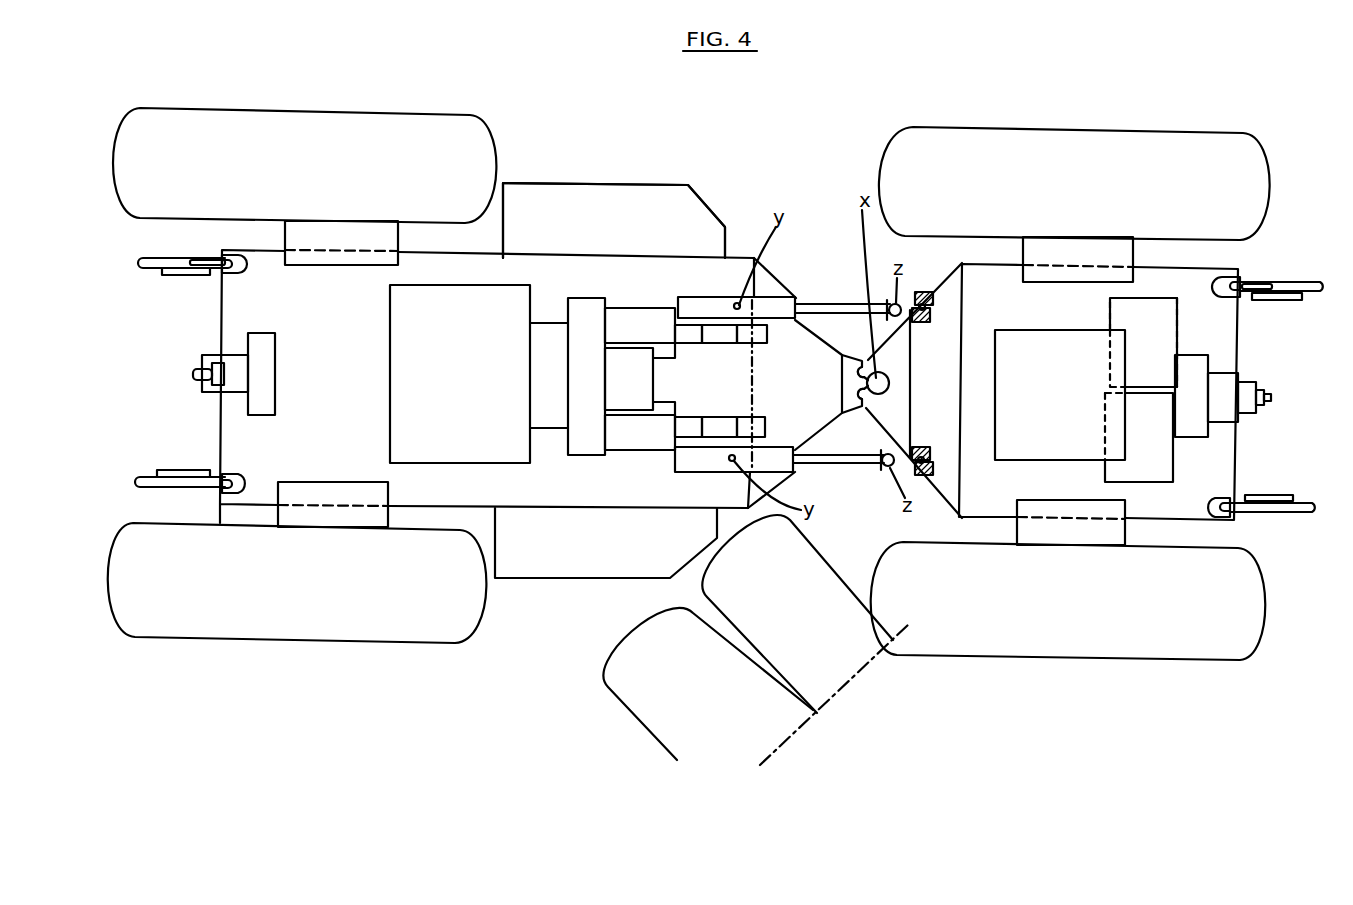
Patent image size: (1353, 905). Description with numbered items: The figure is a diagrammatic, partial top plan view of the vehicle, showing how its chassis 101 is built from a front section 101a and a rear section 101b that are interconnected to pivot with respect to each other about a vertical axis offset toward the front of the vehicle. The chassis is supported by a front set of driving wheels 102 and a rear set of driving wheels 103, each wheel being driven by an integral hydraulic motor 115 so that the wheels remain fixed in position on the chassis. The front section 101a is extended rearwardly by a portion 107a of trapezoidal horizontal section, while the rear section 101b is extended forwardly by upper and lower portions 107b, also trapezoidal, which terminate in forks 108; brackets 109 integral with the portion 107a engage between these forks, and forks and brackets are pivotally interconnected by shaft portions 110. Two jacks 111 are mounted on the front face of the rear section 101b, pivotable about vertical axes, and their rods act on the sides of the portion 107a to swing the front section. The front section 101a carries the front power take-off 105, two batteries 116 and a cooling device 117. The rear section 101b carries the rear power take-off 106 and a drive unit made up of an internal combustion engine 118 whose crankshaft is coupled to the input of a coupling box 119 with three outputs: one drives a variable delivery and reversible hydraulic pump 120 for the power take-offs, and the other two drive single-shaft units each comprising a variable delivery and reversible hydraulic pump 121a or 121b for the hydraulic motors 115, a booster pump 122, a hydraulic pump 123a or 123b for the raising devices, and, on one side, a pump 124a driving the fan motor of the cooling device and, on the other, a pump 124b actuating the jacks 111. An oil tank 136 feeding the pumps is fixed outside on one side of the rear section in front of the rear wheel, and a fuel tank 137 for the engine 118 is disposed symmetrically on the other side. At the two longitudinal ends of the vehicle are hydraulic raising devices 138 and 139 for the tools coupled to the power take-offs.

The chassis 101 is at (742, 247).
The front section of the chassis 101a is at (1240, 330).
The rear section of the chassis 101b is at (212, 297).
The front set of driving wheels 102 is at (1205, 121).
The rear set of driving wheels 103 is at (168, 97).
The front power take-off 105 is at (1277, 389).
The rear power take-off 106 is at (200, 360).
The portion having a trapezoidal horizontal section 107a is at (927, 283).
The upper and lower portions having a trapezoidal horizontal section 107b is at (785, 274).
The forks 108 is at (852, 387).
The brackets 109 is at (864, 366).
The shaft portions 110 is at (871, 397).
The jacks 111 is at (789, 305).
The hydraulic motor 115 is at (390, 254).
The batteries 116 is at (1162, 320).
The cooling device 117 is at (1016, 438).
The internal combustion engine 118 is at (466, 383).
The coupling box 119 is at (600, 379).
The variable delivery and reversible hydraulic pump 120 is at (638, 390).
The variable delivery and reversible hydraulic pump 121a is at (650, 446).
The variable delivery and reversible hydraulic pump 121b is at (648, 339).
The booster pump 122 is at (690, 336).
The hydraulic pump 123a is at (723, 426).
The hydraulic pump 123b is at (720, 337).
The pump 124a is at (758, 337).
The pump 124b is at (755, 426).
The oil tank 136 is at (547, 562).
The fuel tank 137 is at (512, 200).
The hydraulic raising device 138 is at (1262, 491).
The hydraulic raising device 139 is at (182, 458).